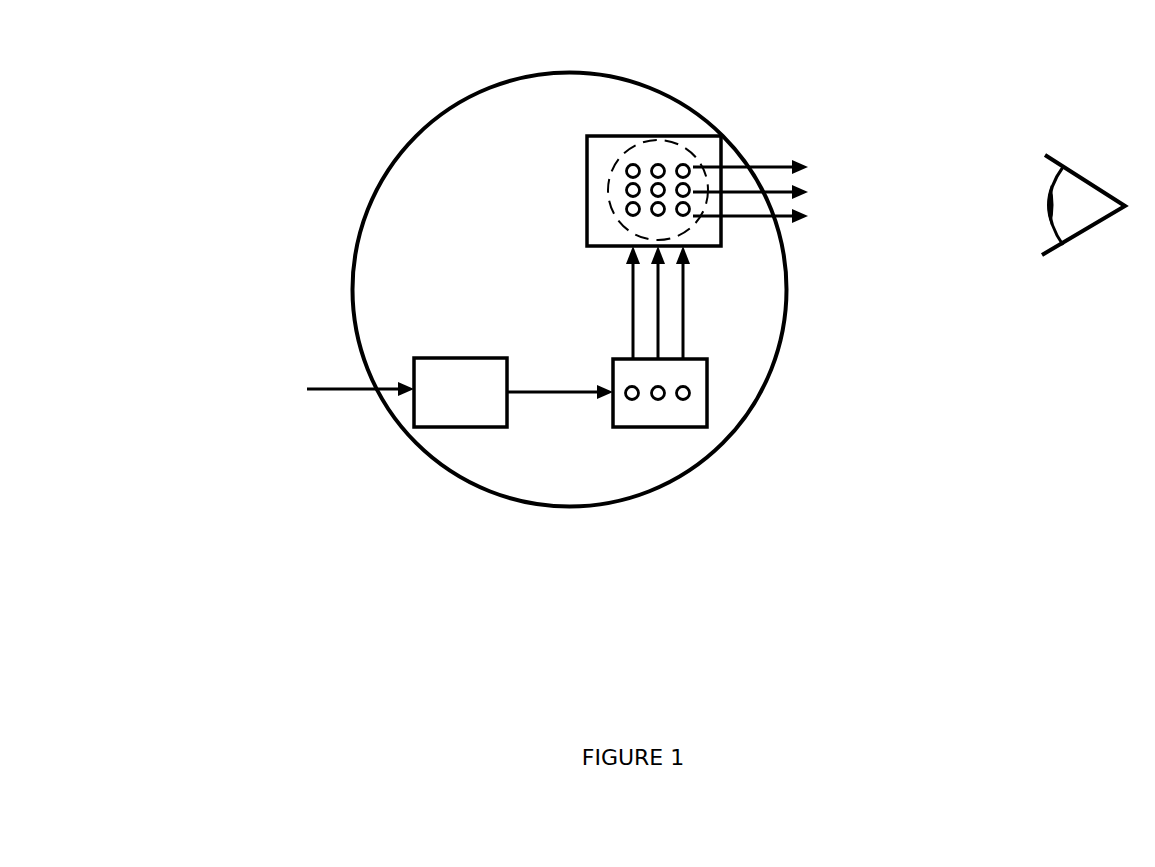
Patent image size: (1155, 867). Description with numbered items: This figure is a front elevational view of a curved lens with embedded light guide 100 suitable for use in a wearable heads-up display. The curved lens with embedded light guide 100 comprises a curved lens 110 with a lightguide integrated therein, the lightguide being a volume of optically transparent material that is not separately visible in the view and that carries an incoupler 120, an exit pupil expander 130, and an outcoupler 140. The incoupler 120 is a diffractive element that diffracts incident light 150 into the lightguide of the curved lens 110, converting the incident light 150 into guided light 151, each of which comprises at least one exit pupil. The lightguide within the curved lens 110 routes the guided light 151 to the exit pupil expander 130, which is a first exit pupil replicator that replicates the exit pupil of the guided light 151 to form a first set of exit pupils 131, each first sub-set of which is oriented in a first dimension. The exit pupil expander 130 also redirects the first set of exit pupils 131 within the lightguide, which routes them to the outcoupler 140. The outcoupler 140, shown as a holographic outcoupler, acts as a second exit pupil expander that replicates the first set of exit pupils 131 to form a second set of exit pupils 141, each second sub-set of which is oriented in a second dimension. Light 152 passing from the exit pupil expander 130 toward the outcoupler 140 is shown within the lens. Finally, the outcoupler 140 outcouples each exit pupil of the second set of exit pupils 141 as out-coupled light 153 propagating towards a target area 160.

The curved lens with embedded light guide 100 is at (222, 212).
The curved lens 110 is at (443, 110).
The incoupler 120 is at (437, 427).
The exit pupil expander 130 is at (623, 427).
The first set of exit pupils 131 is at (632, 400).
The outcoupler 140 is at (697, 136).
The second set of exit pupils 141 is at (620, 167).
The incident light 150 is at (337, 388).
The guided light 151 is at (557, 395).
The light beams 152 is at (633, 280).
The out-coupled light 153 is at (808, 167).
The target area 160 is at (1073, 168).